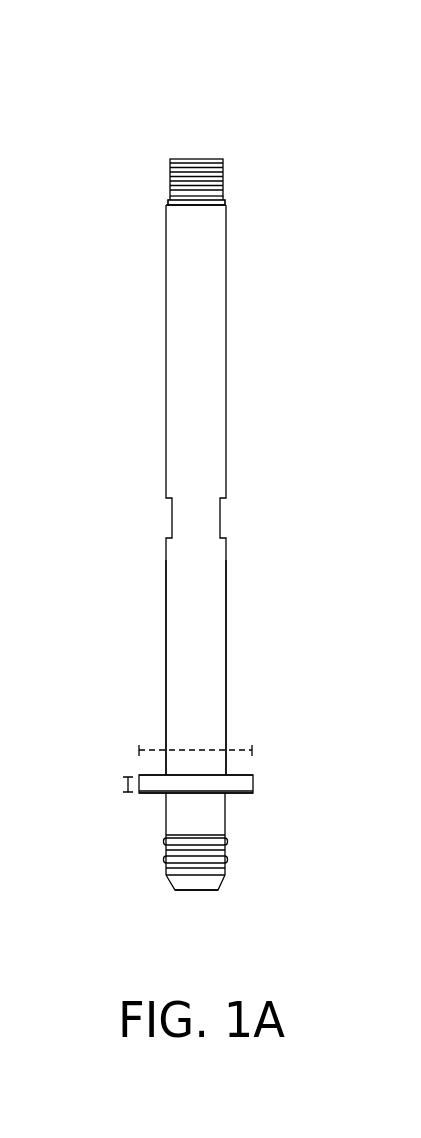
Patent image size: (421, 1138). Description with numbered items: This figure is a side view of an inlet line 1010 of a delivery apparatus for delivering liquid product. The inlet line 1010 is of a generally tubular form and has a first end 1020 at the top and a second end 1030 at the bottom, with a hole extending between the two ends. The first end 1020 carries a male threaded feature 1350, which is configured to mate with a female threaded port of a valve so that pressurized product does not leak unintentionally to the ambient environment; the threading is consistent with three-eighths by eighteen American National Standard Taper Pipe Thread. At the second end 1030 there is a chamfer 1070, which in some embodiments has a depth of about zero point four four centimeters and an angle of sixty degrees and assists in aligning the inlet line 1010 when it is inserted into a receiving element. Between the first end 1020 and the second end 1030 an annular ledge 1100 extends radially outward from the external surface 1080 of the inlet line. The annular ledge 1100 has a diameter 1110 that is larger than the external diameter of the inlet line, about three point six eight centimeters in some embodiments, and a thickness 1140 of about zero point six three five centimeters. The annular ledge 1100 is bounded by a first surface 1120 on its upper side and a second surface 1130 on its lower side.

The inlet line 1010 is at (109, 86).
The first end 1020 is at (127, 184).
The second end 1030 is at (164, 905).
The chamfer 1070 is at (223, 887).
The external surface 1080 is at (209, 633).
The annular ledge 1100 is at (266, 785).
The diameter 1110 is at (231, 748).
The first surface 1120 is at (154, 774).
The second surface 1130 is at (147, 800).
The thickness 1140 is at (116, 781).
The male threaded feature 1350 is at (229, 171).